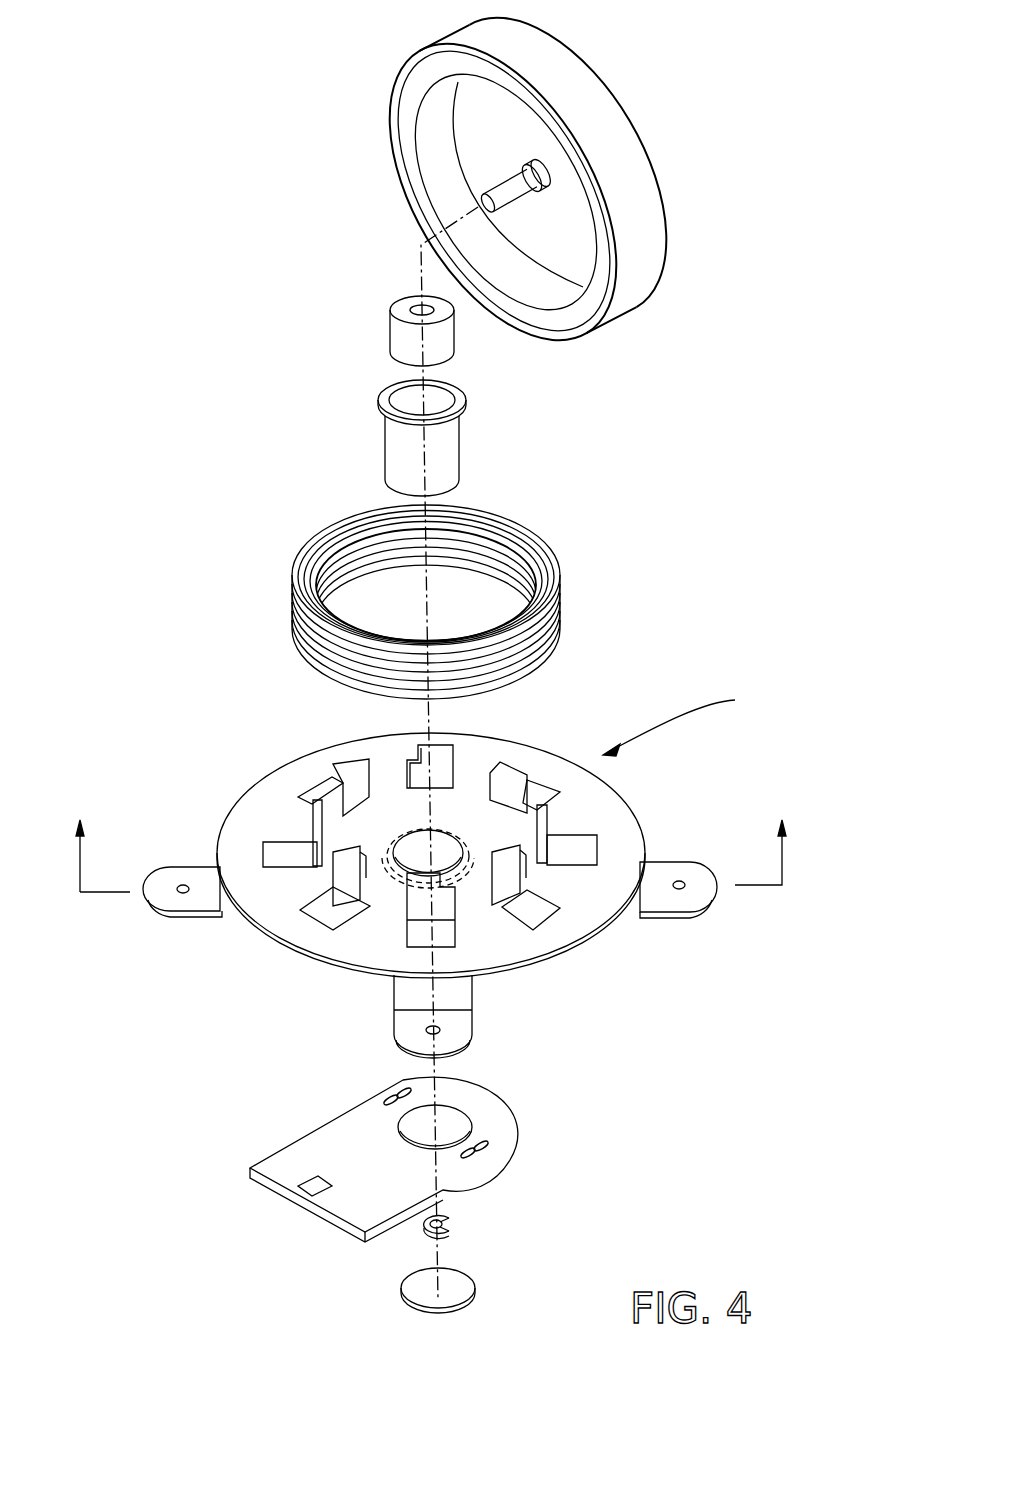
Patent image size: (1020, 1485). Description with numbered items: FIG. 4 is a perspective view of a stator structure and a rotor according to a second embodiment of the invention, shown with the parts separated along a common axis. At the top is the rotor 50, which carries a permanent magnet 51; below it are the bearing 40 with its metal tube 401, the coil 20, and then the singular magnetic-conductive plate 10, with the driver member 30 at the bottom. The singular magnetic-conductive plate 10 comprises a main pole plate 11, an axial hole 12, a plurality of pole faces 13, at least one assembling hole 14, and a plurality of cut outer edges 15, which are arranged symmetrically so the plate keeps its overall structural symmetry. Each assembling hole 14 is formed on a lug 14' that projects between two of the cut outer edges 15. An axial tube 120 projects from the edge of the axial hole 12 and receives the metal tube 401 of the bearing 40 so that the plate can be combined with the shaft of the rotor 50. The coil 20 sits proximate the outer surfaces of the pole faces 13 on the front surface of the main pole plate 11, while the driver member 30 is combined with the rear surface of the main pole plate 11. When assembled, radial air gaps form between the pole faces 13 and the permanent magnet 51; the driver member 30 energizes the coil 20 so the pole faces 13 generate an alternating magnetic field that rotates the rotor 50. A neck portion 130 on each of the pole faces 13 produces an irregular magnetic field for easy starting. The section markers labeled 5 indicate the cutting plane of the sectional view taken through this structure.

The rotor 50 is at (632, 180).
The permanent magnet 51 is at (403, 162).
The bearing 40 is at (450, 338).
The metal tube 401 is at (455, 447).
The coil 20 is at (545, 545).
The singular magnetic-conductive plate 10 is at (762, 717).
The main pole plate 11 is at (497, 830).
The axial hole 12 is at (447, 853).
The axial tube 120 is at (388, 850).
The pole faces 13 is at (338, 767).
The neck portion 130 is at (340, 873).
The assembling hole 14 is at (725, 906).
The lug 14' is at (476, 932).
The cut outer edges 15 is at (548, 962).
The driver member 30 is at (507, 1122).
The section line 5- 5 is at (427, 831).